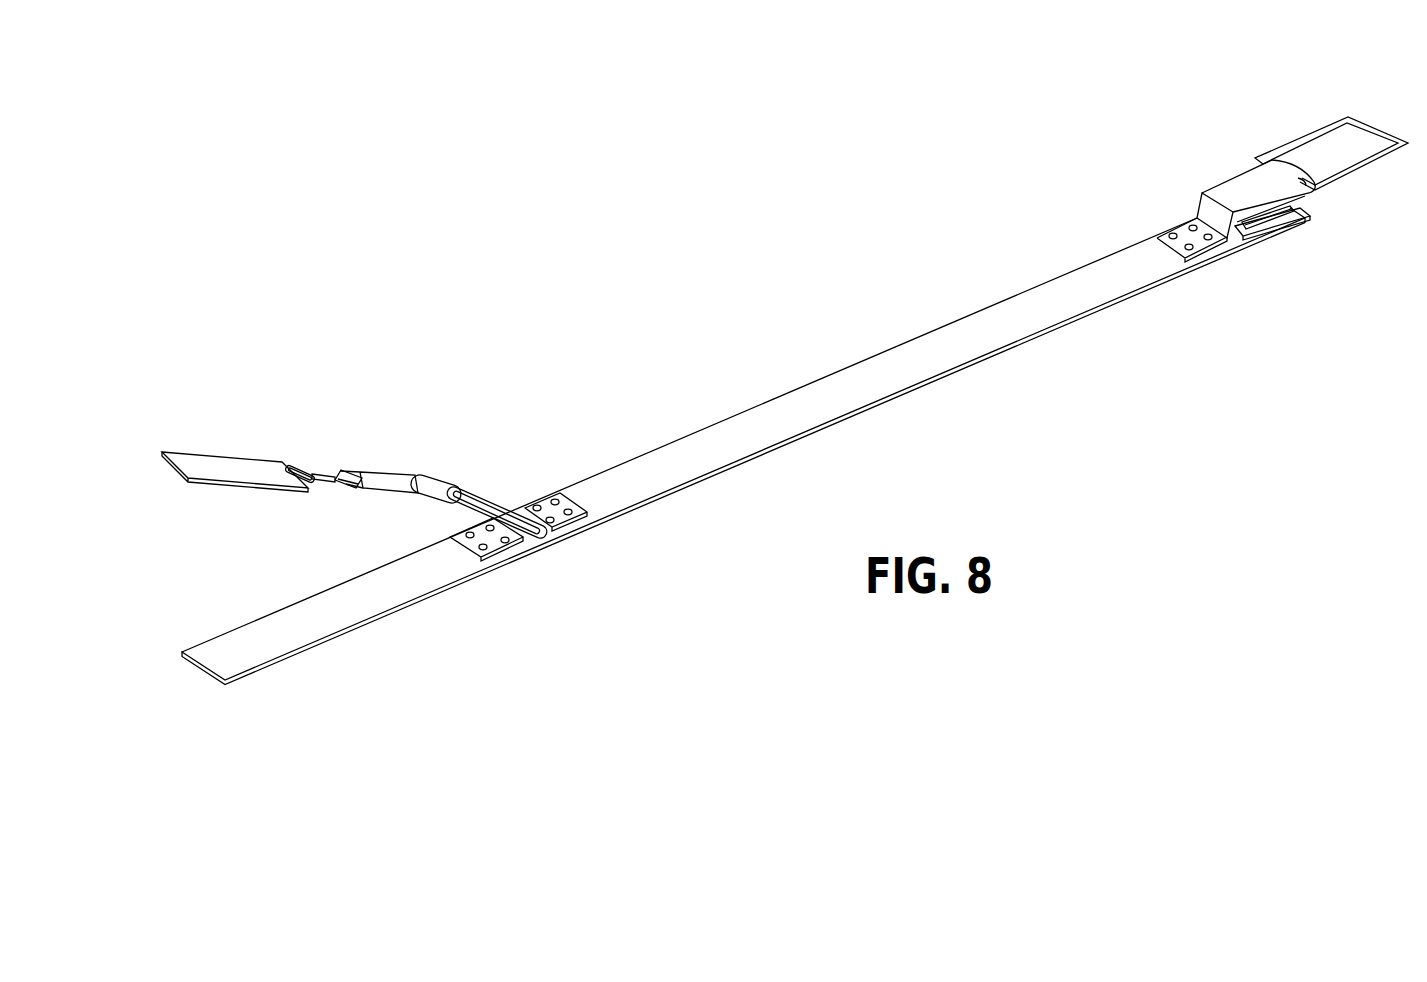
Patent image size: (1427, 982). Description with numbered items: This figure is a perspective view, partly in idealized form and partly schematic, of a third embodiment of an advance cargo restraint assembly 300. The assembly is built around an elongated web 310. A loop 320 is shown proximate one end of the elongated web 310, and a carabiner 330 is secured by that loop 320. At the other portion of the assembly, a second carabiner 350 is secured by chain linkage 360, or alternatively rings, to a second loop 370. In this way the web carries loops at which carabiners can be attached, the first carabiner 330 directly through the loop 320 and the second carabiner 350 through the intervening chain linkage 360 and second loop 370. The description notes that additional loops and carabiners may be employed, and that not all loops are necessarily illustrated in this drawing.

The advance cargo restraint assembly 300 is at (722, 358).
The elongated web 310 is at (1027, 313).
The loop 320 is at (1225, 190).
The carabiner 330 is at (1335, 122).
The second carabiner 350 is at (207, 463).
The chain linkage 360 is at (337, 482).
The second loop 370 is at (480, 492).